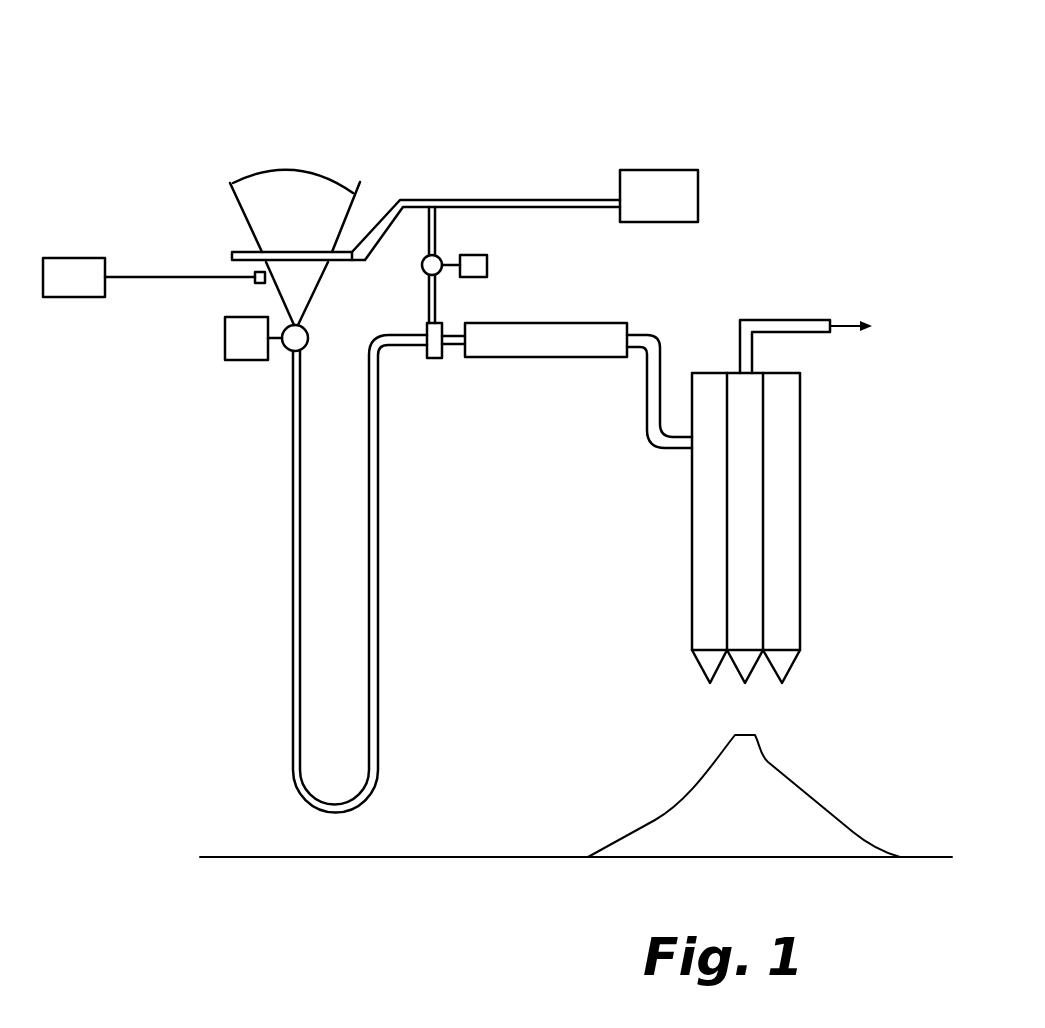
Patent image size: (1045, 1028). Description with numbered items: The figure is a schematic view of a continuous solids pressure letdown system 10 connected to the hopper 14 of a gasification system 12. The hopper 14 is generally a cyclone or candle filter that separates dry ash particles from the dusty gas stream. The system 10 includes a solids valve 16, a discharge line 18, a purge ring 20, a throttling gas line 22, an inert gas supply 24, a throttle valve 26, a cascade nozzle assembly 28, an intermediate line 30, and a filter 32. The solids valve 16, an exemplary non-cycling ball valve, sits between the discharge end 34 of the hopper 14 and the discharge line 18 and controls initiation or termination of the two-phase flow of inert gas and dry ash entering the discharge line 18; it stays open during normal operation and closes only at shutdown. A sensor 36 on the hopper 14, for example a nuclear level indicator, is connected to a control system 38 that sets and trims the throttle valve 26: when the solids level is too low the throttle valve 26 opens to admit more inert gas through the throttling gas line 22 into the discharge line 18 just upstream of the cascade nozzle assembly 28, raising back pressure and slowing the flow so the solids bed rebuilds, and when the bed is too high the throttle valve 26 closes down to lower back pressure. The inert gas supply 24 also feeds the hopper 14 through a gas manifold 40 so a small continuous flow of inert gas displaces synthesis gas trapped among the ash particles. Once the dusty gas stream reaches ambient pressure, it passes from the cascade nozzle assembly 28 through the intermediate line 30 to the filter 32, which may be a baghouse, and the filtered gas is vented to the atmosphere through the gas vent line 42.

The continuous solids pressure letdown system 10 is at (556, 98).
The gasification system 12 is at (228, 198).
The hopper 14 is at (268, 288).
The solids valve 16 is at (214, 341).
The discharge line 18 is at (290, 557).
The purge ring 20 is at (425, 332).
The throttling gas line 22 is at (436, 303).
The inert gas supply 24 is at (637, 172).
The throttle valve 26 is at (494, 266).
The cascade nozzle assembly 28 is at (530, 372).
The intermediate line 30 is at (651, 333).
The filter 32 is at (805, 498).
The discharge end 34 is at (315, 284).
The sensor 36 is at (257, 273).
The control system 38 is at (80, 258).
The gas manifold 40 is at (357, 232).
The gas vent line 42 is at (775, 318).